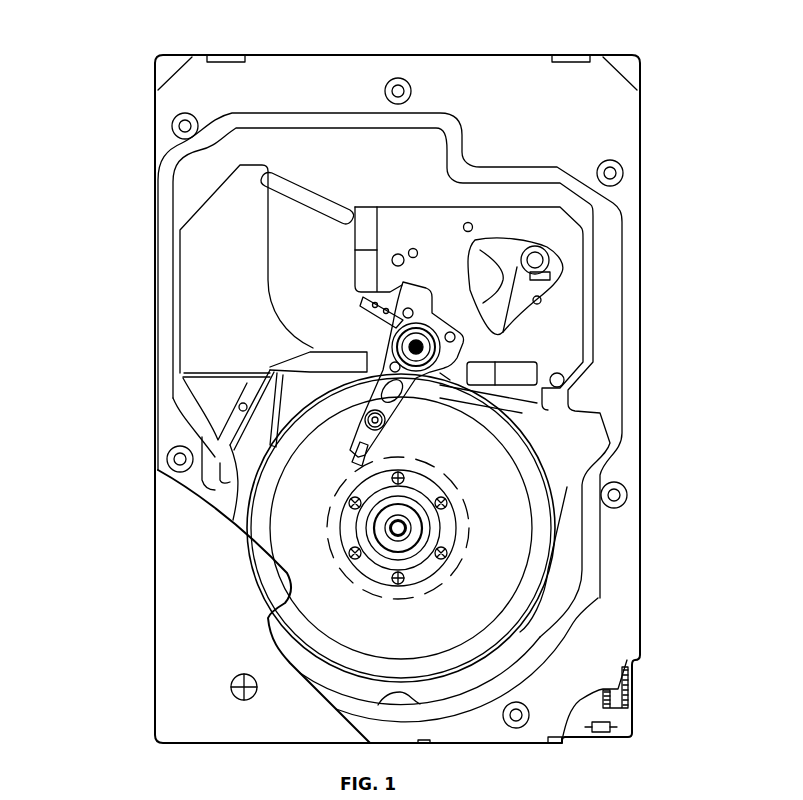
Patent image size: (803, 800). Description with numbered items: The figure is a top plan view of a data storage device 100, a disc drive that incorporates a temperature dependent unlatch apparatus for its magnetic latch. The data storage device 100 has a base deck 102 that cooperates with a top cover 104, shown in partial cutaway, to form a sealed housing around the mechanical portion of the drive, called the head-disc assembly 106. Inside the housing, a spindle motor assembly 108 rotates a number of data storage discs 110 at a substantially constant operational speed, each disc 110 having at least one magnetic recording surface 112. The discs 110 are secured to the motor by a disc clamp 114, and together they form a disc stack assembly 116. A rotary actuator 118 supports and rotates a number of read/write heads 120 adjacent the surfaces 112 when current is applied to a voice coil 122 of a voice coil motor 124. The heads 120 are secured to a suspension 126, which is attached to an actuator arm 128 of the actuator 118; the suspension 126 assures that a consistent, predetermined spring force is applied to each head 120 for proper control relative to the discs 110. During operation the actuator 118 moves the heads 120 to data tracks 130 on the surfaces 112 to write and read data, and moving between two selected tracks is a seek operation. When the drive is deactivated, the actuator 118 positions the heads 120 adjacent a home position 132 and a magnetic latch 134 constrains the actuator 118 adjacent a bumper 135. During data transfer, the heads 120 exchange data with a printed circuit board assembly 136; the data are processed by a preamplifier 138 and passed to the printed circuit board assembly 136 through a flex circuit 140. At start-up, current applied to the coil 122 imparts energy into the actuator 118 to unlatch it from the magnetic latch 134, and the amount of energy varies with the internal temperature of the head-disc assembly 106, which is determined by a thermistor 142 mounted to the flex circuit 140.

The data storage device 100 is at (322, 40).
The base deck 102 is at (490, 75).
The top cover 104 is at (200, 683).
The head-disc assembly 106 is at (648, 357).
The spindle motor assembly 108 is at (440, 520).
The data storage disc 110 is at (555, 540).
The magnetic recording surface 112 is at (533, 585).
The disc clamp 114 is at (381, 583).
The disc stack assembly 116 is at (548, 468).
The rotary actuator 118 is at (420, 385).
The read/write head 120 is at (357, 458).
The voice coil 122 is at (485, 238).
The voice coil motor 124 is at (584, 215).
The suspension 126 is at (366, 438).
The actuator arm 128 is at (417, 412).
The data track 130 is at (300, 447).
The home position 132 is at (350, 578).
The magnetic latch 134 is at (560, 248).
The bumper 135 is at (548, 284).
The printed circuit board assembly 136 is at (602, 740).
The preamplifier 138 is at (325, 350).
The flex circuit 140 is at (390, 335).
The thermistor 142 is at (367, 368).